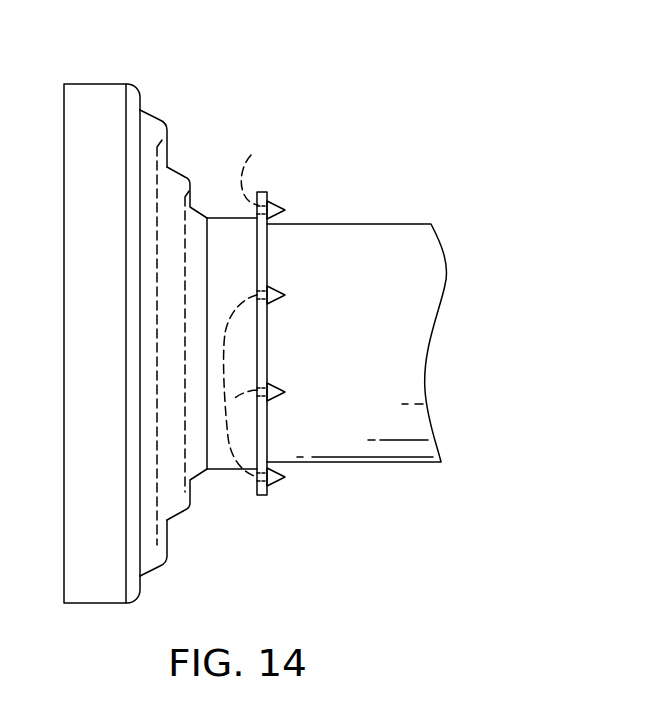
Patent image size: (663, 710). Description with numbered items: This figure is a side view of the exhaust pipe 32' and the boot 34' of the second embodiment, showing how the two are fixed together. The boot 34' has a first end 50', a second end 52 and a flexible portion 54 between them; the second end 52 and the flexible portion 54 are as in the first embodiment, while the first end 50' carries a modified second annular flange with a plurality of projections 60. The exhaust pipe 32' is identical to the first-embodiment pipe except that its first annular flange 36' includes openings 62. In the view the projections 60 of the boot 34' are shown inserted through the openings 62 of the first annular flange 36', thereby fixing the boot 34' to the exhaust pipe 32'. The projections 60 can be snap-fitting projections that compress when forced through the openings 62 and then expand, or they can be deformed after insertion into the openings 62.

The second end 52 is at (97, 108).
The boot 34' is at (159, 309).
The flexible portion 54 is at (178, 181).
The first end 50' is at (231, 316).
The first annular flange 36' is at (303, 343).
The projections 60 is at (277, 284).
The openings 62 is at (239, 303).
The exhaust pipe 32' is at (357, 310).